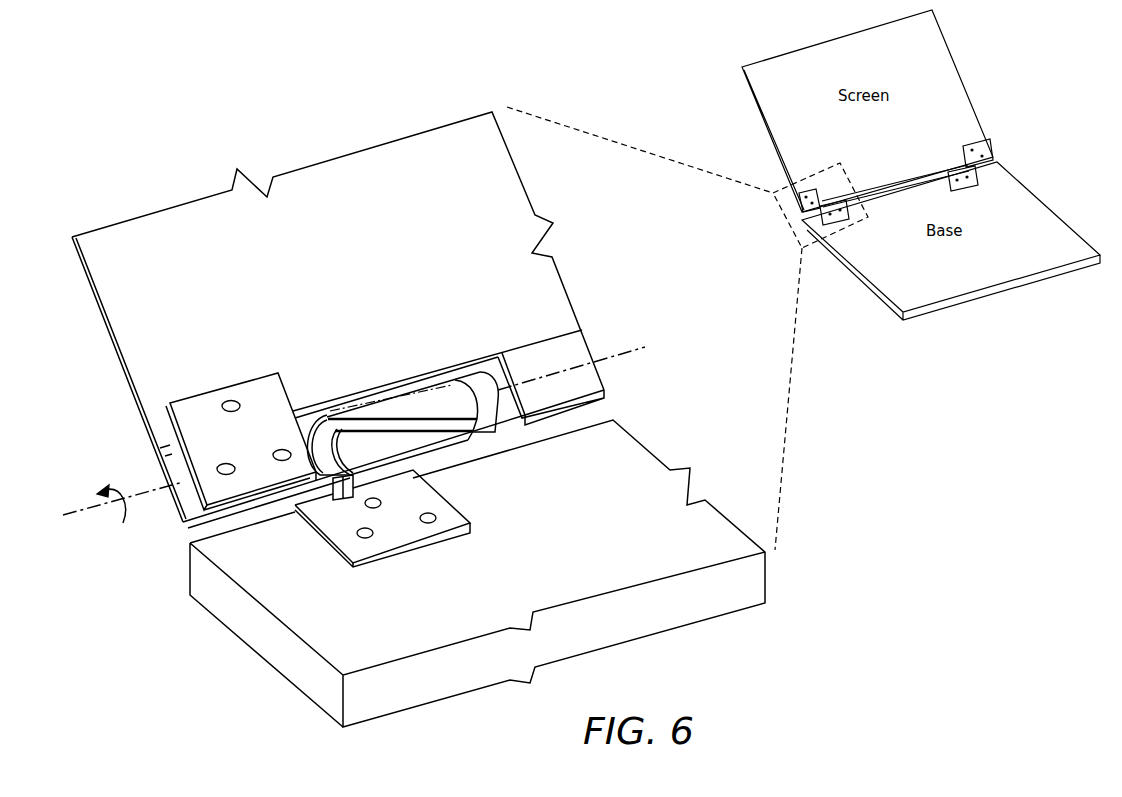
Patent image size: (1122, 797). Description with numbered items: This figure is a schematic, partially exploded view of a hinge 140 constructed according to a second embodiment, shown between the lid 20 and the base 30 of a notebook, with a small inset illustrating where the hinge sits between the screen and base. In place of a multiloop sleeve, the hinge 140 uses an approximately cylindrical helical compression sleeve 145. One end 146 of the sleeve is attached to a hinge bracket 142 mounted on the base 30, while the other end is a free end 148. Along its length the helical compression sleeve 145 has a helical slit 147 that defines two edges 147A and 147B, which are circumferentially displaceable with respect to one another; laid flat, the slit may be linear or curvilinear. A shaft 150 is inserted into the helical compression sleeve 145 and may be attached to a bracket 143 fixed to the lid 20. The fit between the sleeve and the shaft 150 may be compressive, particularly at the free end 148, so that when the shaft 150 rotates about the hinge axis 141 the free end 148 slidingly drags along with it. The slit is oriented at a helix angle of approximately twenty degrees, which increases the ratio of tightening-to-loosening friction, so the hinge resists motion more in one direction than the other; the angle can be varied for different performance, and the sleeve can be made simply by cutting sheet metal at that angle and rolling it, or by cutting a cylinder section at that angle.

The lid 20 is at (410, 230).
The base 30 is at (565, 580).
The hinge 140 is at (197, 530).
The hinge axis 141 is at (86, 512).
The hinge bracket 142 is at (342, 503).
The bracket 143 is at (259, 392).
The helical compression sleeve 145 is at (370, 452).
The end of helical compression sleeve 146 is at (295, 503).
The helical slit 147 is at (378, 427).
The edge of helical slit 147A is at (417, 433).
The edge of helical slit 147B is at (392, 422).
The free end 148 is at (453, 400).
The shaft 150 is at (317, 430).